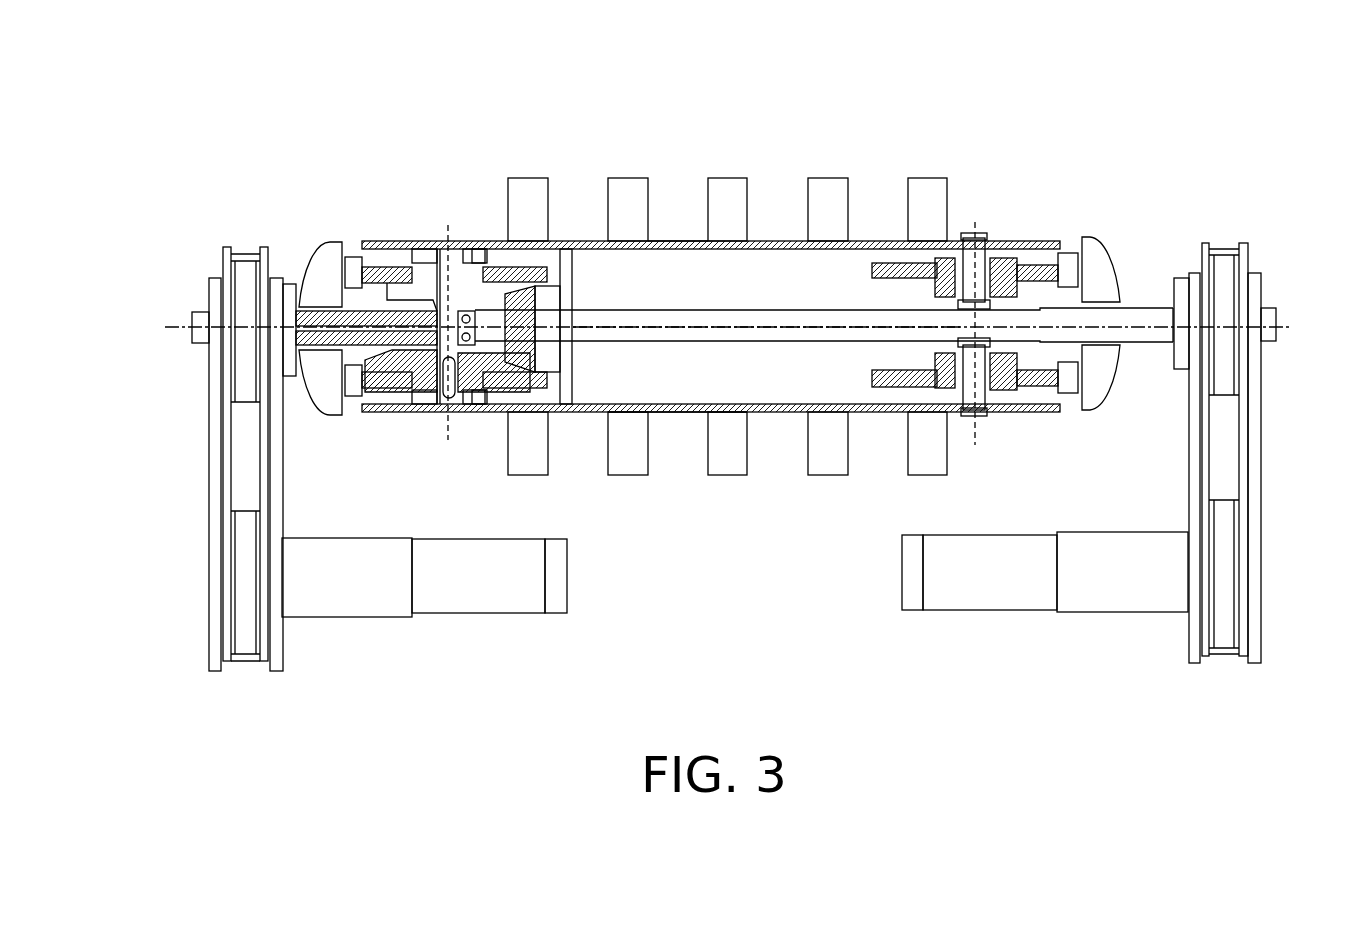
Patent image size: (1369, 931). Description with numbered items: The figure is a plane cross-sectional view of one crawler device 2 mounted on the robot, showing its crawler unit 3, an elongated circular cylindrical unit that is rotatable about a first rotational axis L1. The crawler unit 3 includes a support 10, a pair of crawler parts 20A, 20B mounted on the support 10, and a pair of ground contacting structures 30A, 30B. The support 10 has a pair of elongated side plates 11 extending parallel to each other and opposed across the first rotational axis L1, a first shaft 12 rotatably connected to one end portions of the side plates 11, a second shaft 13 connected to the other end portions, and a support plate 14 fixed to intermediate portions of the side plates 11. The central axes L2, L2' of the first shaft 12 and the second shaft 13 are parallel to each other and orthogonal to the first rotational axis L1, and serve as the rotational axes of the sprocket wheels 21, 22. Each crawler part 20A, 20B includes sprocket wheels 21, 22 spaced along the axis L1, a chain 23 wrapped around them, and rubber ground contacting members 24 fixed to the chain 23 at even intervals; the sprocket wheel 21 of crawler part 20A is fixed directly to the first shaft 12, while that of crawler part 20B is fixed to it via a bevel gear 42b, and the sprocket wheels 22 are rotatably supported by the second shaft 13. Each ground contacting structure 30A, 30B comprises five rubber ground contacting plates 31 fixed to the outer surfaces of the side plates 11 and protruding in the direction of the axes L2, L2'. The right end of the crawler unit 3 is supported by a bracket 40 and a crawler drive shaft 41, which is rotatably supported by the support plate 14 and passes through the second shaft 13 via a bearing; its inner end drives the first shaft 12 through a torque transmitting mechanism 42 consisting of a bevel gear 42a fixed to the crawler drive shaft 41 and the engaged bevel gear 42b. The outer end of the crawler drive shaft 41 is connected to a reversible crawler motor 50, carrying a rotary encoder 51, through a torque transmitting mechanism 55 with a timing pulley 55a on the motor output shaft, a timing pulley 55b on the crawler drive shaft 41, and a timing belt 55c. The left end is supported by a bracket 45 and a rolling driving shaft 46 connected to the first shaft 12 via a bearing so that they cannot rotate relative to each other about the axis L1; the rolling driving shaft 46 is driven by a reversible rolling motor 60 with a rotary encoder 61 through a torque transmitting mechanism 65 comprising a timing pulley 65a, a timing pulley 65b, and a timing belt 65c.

The crawler device 2 is at (1168, 162).
The crawler unit 3 is at (1015, 230).
The support 10 is at (768, 240).
The side plate 11 is at (690, 240).
The first shaft 12 is at (440, 412).
The second shaft 13 is at (978, 415).
The support plate 14 is at (573, 285).
The crawler part 20A is at (1098, 225).
The crawler part 20B is at (1087, 420).
The sprocket wheel 21 is at (498, 248).
The sprocket wheel 22 is at (890, 262).
The chain 23 is at (1065, 258).
The ground contacting member 24 is at (308, 250).
The ground contacting structure 30A is at (728, 178).
The ground contacting structure 30B is at (730, 480).
The ground contacting plate 31 is at (630, 182).
The bracket 40 is at (1262, 503).
The crawler drive shaft 41 is at (840, 310).
The torque transmitting mechanism 42 is at (521, 288).
The bevel gear 42a is at (527, 345).
The bevel gear 42b is at (385, 392).
The bracket 45 is at (210, 535).
The rolling driving shaft 46 is at (378, 257).
The crawler motor 50 is at (990, 600).
The rotary encoder 51 is at (910, 603).
The torque transmitting mechanism 55 is at (1240, 430).
The timing pulley 55a is at (1230, 645).
The timing pulley 55b is at (1232, 248).
The timing belt 55c is at (1225, 450).
The rolling motor 60 is at (475, 605).
The rotary encoder 61 is at (560, 600).
The torque transmitting mechanism 65 is at (215, 440).
The timing pulley 65a is at (240, 640).
The timing pulley 65b is at (238, 248).
The timing belt 65c is at (240, 440).
The first rotational axis L1 is at (700, 327).
The central axis L2 is at (427, 288).
The central axis L2' is at (990, 288).